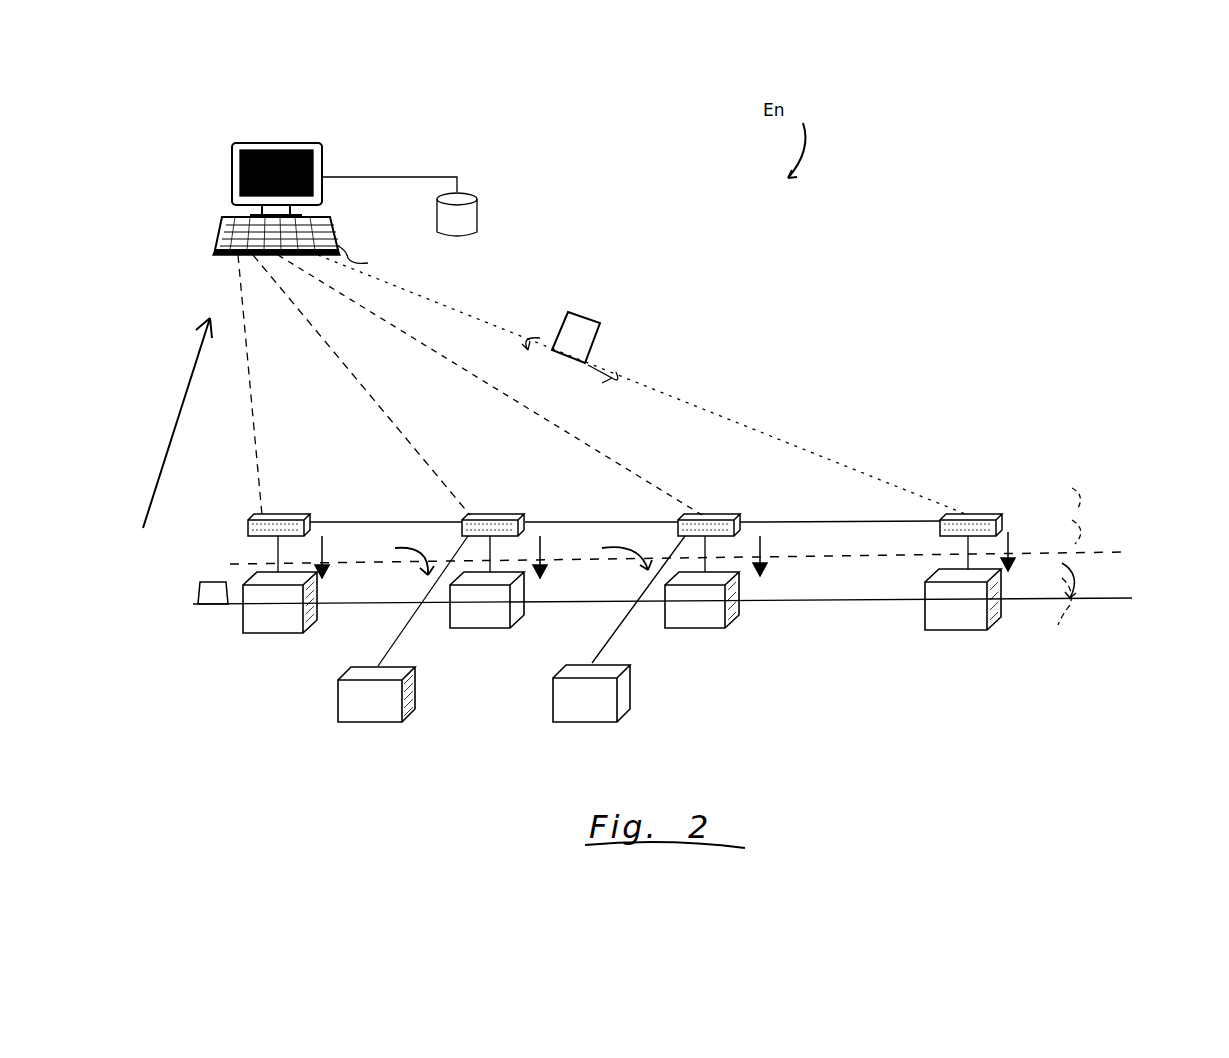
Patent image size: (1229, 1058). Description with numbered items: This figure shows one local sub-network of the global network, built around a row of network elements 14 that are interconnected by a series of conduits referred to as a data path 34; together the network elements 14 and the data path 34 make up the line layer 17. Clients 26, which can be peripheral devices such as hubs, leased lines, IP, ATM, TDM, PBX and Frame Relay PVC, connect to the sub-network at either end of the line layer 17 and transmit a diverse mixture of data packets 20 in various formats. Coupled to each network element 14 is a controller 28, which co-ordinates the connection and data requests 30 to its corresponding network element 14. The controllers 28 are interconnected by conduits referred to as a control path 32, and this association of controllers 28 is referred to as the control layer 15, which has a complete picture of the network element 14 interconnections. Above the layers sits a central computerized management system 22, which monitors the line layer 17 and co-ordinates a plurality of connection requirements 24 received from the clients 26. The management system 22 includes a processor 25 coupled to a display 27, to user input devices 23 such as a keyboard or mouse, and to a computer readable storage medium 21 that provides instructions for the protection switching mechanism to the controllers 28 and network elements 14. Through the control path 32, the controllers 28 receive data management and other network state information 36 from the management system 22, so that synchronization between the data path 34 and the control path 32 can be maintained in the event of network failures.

The network element 14 is at (272, 632).
The control layer 15 is at (1098, 508).
The line layer 17 is at (1082, 585).
The data packets 20 is at (205, 584).
The computer readable storage medium 21 is at (468, 211).
The management system 22 is at (352, 185).
The user input devices 23 is at (368, 257).
The connection requirements 24 is at (175, 415).
The processor 25 is at (315, 218).
The clients 26 is at (168, 676).
The display 27 is at (320, 158).
The controller 28 is at (300, 515).
The connection and data requests 30 is at (330, 558).
The control path 32 is at (828, 520).
The data path 34 is at (782, 606).
The network state information 36 is at (570, 347).